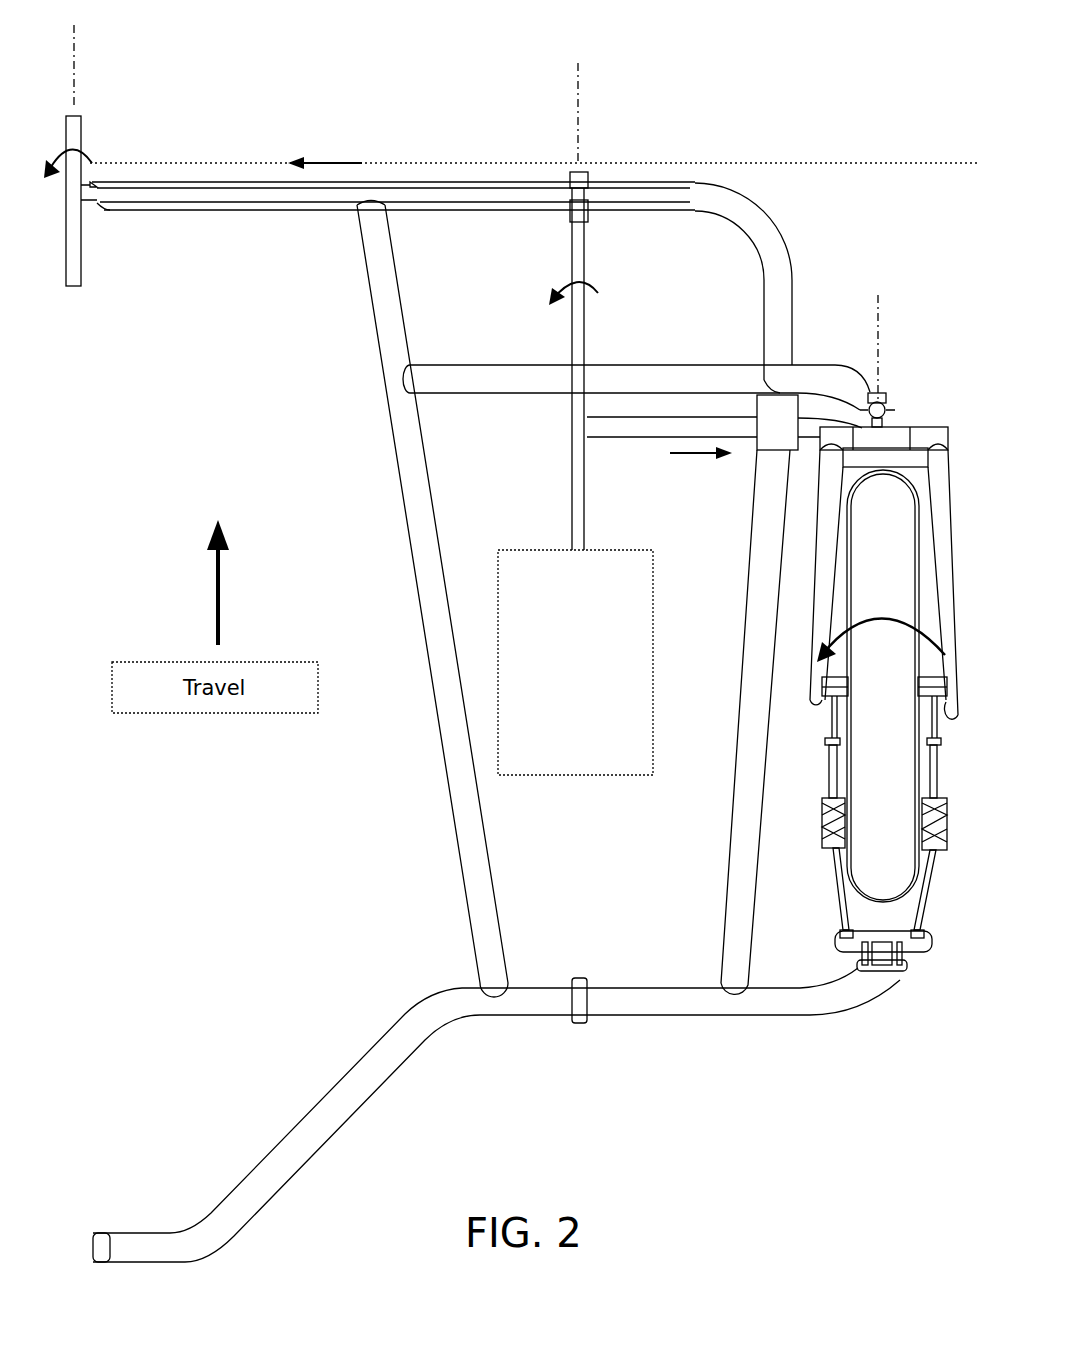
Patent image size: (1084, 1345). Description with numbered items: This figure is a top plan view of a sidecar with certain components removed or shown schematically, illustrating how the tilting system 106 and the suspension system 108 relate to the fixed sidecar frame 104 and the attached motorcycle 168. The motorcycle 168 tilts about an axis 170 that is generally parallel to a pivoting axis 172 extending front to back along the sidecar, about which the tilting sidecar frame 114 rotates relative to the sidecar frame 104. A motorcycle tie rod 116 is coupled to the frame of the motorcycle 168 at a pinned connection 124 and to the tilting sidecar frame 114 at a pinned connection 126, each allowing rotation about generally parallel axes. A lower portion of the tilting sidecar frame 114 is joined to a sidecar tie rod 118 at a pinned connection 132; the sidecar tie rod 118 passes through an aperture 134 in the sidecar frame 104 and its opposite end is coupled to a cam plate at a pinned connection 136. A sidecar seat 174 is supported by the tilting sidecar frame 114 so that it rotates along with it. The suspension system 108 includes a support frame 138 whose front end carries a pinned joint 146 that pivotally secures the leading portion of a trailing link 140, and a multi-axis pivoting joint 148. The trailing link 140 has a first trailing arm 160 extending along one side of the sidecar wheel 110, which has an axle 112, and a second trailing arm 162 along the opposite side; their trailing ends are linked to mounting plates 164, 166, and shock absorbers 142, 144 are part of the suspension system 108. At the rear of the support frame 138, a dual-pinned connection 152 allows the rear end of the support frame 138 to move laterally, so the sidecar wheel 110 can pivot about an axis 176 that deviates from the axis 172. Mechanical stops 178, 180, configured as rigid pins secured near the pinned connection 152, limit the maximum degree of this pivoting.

The axis 170 is at (77, 64).
The motorcycle 168 is at (82, 134).
The pinned connection 124 is at (112, 238).
The motorcycle tie rod 116 is at (388, 202).
The pivoting axis 172 is at (583, 88).
The pinned connection 126 is at (597, 155).
The tilting sidecar frame 114 is at (562, 325).
The tilting system 106 is at (325, 335).
The sidecar tie rod 118 is at (713, 423).
The aperture 134 is at (768, 362).
The pinned connection 136 is at (874, 380).
The axis 176 is at (880, 300).
The pinned connection 132 is at (890, 396).
The sidecar frame 104 is at (413, 472).
The sidecar seat 174 is at (616, 777).
The support frame 138 is at (812, 505).
The pivoting joint 148 is at (860, 437).
The pinned joint 146 is at (816, 458).
The trailing link 140 is at (784, 616).
The sidecar wheel 110 is at (850, 603).
The axle 112 is at (822, 690).
The first trailing arm 160 is at (832, 720).
The mounting plate 166 is at (830, 770).
The mounting plate 164 is at (946, 698).
The second trailing arm 162 is at (932, 777).
The shock absorber 142 is at (806, 868).
The suspension system 108 is at (804, 940).
The shock absorber 144 is at (899, 910).
The mechanical stop 178 is at (893, 975).
The pinned connection 152 is at (879, 990).
The mechanical stop 180 is at (903, 975).